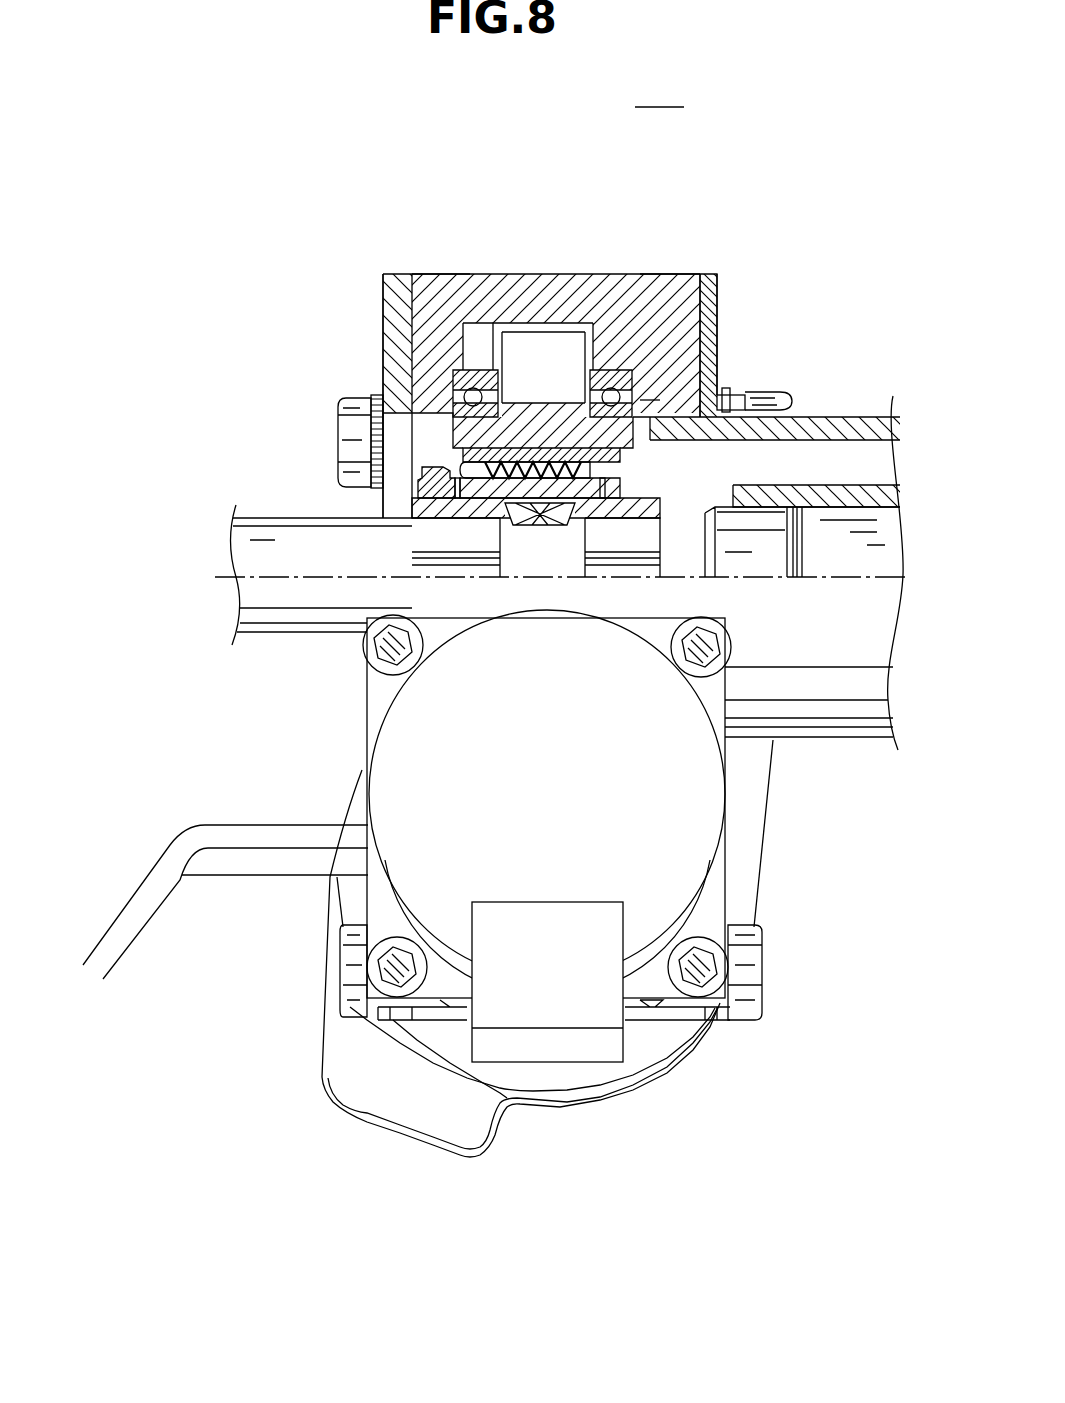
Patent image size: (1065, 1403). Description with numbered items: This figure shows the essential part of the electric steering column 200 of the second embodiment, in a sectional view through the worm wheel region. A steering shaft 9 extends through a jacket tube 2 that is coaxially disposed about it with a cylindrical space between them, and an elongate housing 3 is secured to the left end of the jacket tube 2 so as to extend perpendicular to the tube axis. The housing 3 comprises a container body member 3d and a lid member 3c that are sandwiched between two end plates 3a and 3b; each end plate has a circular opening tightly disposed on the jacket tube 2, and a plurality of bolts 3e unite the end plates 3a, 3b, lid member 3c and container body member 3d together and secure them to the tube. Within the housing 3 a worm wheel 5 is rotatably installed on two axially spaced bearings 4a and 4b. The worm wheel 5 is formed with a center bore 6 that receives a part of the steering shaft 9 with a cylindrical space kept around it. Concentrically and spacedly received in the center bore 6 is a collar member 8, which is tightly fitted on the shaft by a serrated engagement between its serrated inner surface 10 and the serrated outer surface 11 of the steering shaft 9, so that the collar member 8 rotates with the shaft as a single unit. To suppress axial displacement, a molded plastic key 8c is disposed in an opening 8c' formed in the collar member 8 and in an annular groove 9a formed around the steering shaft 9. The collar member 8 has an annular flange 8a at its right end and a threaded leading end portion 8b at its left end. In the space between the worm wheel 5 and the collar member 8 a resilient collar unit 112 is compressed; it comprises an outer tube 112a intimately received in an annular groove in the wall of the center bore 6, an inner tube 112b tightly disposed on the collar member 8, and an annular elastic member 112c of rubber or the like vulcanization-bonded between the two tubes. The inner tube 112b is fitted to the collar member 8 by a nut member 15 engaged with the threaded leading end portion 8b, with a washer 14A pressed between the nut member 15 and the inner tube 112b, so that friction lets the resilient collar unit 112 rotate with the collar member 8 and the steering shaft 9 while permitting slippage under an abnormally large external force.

The jacket tube 2 is at (836, 417).
The housing 3 is at (746, 256).
The end plate 3a is at (717, 293).
The end plate 3b is at (383, 283).
The lid member 3c is at (652, 274).
The container body member 3d is at (438, 274).
The bolts 3e is at (377, 398).
The bearing 4a is at (611, 370).
The bearing 4b is at (472, 370).
The worm wheel 5 is at (540, 350).
The center bore 6 is at (497, 500).
The collar member 8 is at (632, 518).
The annular flange 8a is at (605, 470).
The threaded leading end portion 8b is at (413, 508).
The molded plastic key 8c is at (555, 576).
The opening 8c' is at (481, 577).
The steering shaft 9 is at (297, 632).
The annular groove 9a is at (542, 527).
The serrated inner surface 10 is at (715, 578).
The serrated outer surface 11 is at (643, 565).
The washer 14A is at (453, 513).
The nut member 15 is at (430, 483).
The resilient collar unit 112 is at (437, 455).
The outer tube 112a is at (632, 400).
The inner tube 112b is at (788, 395).
The annular elastic member 112c is at (726, 390).
The electric steering column 200 is at (663, 89).